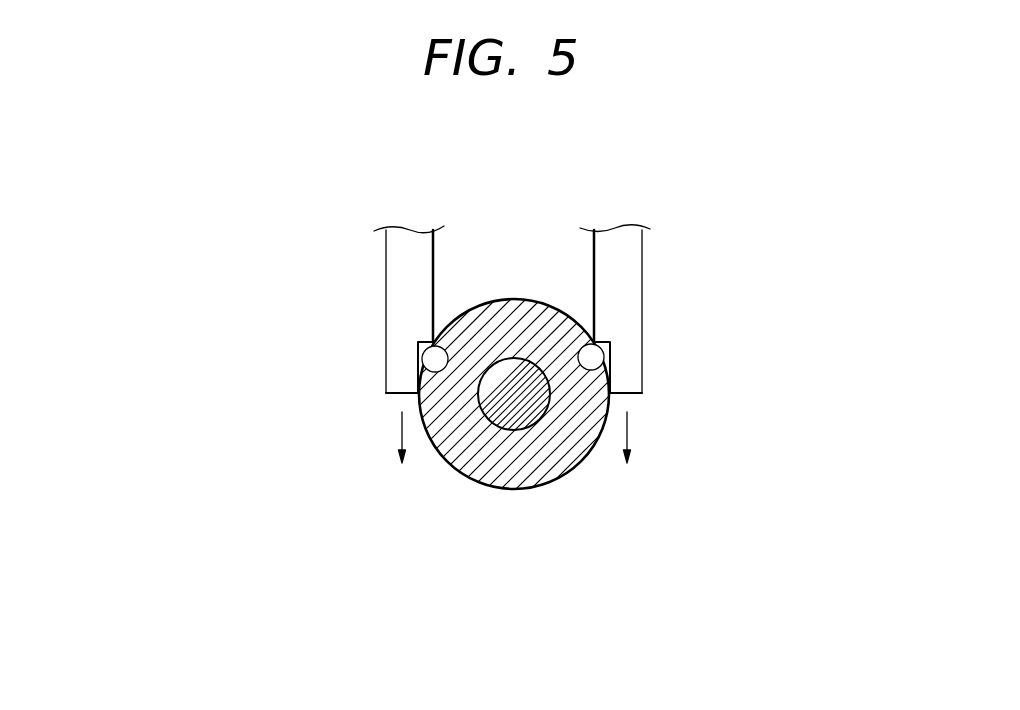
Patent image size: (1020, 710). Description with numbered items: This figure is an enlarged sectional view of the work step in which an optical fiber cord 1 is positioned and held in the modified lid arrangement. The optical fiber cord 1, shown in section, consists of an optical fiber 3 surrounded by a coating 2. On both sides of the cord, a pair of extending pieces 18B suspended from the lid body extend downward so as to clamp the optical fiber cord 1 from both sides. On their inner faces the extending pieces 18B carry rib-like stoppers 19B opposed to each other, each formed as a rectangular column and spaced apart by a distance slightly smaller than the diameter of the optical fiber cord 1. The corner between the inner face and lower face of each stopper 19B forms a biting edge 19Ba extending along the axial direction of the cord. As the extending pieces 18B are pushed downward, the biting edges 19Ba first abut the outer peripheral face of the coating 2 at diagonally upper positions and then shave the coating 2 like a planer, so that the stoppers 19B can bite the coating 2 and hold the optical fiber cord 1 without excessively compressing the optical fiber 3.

The optical fiber cord 1 is at (520, 443).
The coating 2 is at (541, 465).
The optical fiber 3 is at (497, 430).
The extending pieces 18B is at (386, 278).
The rib-like stoppers 19B is at (433, 255).
The biting edge 19Ba is at (418, 370).